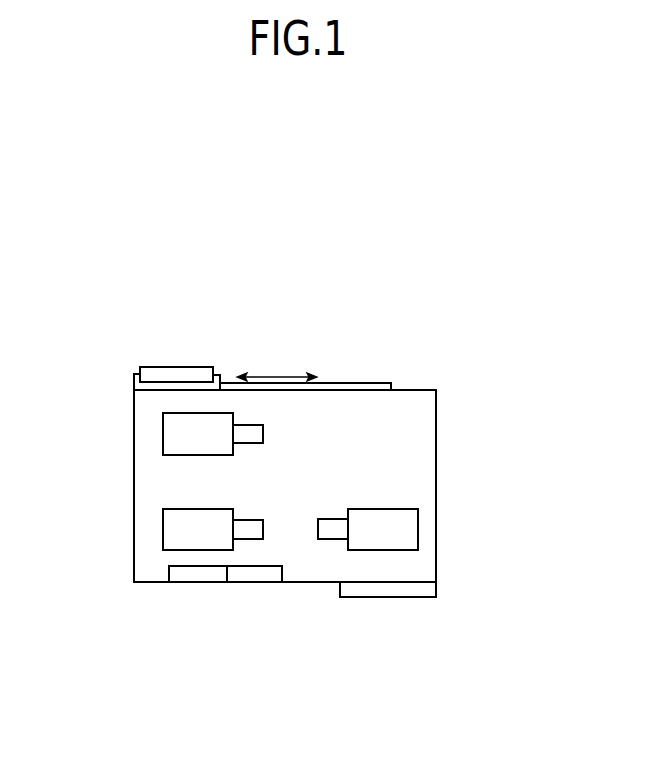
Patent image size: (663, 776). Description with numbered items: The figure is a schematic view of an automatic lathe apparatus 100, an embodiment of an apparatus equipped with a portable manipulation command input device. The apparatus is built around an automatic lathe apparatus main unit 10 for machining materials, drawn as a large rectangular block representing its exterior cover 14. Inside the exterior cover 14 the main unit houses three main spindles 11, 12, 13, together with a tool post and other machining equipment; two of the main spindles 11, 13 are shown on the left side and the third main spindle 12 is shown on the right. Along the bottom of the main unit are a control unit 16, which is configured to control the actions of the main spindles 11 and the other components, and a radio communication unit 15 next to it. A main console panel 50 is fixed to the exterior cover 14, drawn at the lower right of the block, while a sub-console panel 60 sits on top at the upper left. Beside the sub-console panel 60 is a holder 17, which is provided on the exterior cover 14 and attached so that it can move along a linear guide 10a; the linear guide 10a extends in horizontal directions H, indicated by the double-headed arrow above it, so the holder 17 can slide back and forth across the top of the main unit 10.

The automatic lathe apparatus 100 is at (409, 348).
The exterior cover 14 is at (436, 440).
The sub-console panel 60 is at (176, 367).
The holder 17 is at (221, 375).
The linear guide 10a is at (360, 383).
The horizontal directions H is at (280, 377).
The main spindle 13 is at (177, 432).
The main spindle 11 is at (177, 530).
The main spindle 12 is at (388, 534).
The control unit 16 is at (185, 575).
The radio communication unit 15 is at (253, 573).
The automatic lathe apparatus main unit 10 is at (209, 590).
The main console panel 50 is at (397, 592).